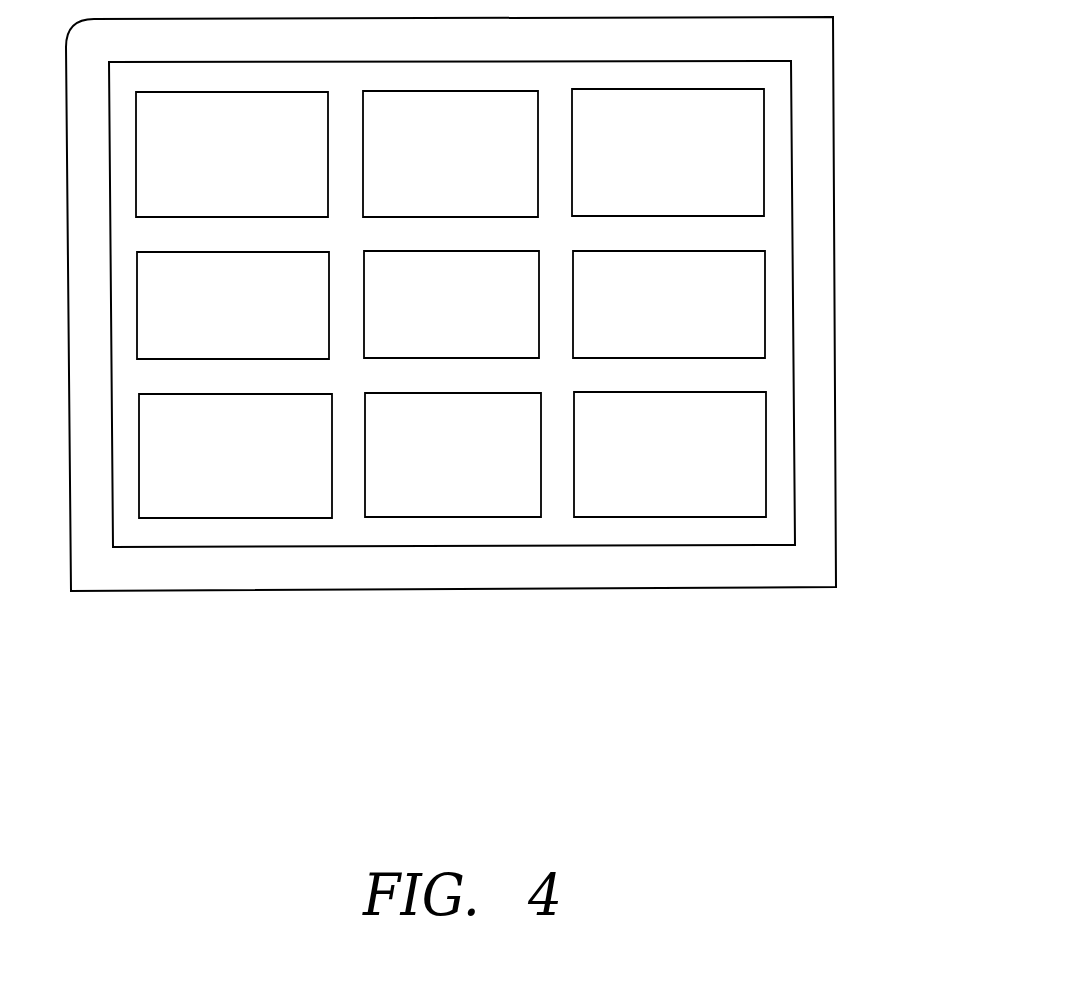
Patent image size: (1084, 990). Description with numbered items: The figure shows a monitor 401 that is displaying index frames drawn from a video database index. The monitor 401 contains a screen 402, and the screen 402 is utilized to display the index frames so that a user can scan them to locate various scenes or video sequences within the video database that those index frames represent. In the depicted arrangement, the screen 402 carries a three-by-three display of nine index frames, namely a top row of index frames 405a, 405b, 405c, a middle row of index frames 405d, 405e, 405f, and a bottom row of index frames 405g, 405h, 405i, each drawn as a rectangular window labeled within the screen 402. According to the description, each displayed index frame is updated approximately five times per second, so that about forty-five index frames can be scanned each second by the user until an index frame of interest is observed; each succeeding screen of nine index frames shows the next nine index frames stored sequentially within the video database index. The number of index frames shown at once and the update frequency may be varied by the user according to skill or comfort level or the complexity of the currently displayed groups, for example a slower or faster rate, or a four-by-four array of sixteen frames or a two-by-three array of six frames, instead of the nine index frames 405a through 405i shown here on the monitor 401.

The monitor 401 is at (812, 132).
The screen 402 is at (770, 375).
The index frame 405a is at (232, 154).
The index frame 405b is at (450, 154).
The index frame 405c is at (668, 152).
The index frame 405d is at (233, 305).
The index frame 405e is at (451, 304).
The index frame 405f is at (669, 304).
The index frame 405g is at (235, 456).
The index frame 405h is at (453, 455).
The index frame 405i is at (670, 454).